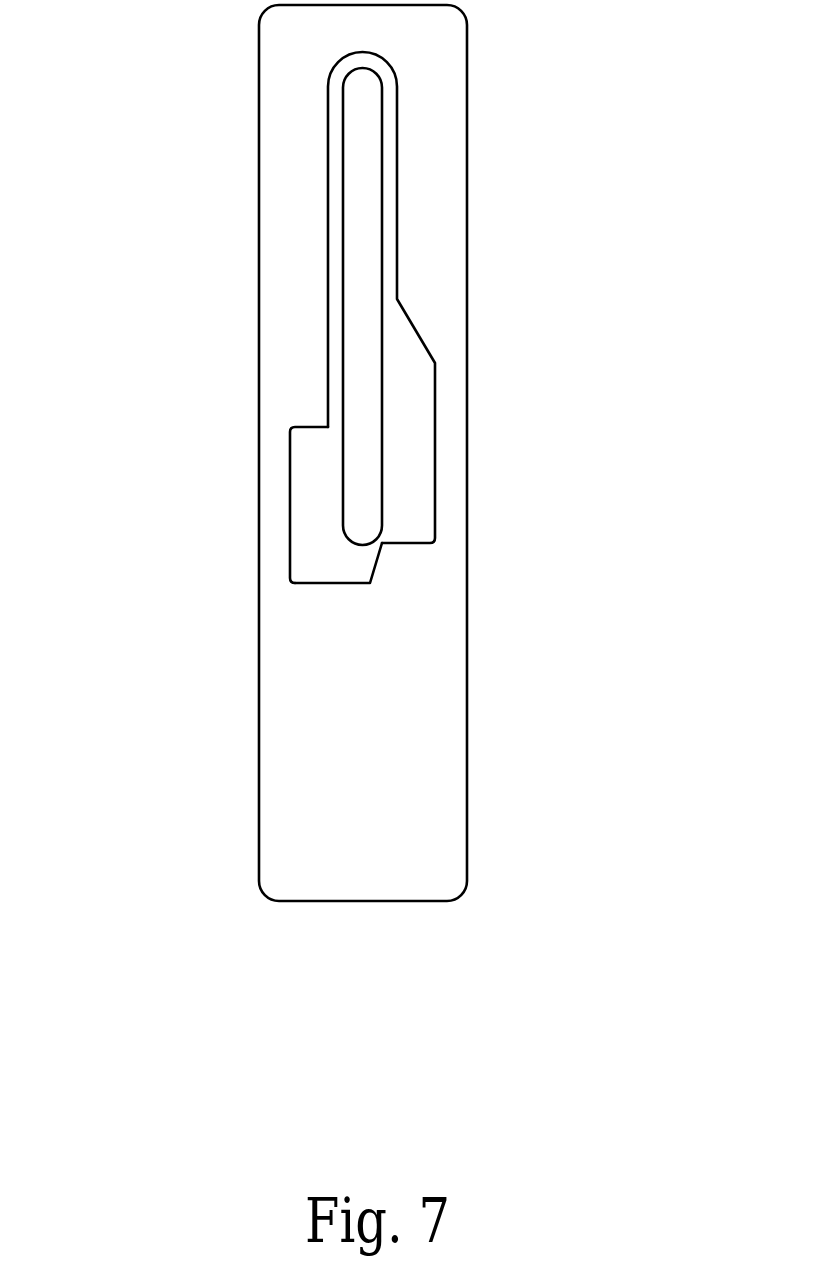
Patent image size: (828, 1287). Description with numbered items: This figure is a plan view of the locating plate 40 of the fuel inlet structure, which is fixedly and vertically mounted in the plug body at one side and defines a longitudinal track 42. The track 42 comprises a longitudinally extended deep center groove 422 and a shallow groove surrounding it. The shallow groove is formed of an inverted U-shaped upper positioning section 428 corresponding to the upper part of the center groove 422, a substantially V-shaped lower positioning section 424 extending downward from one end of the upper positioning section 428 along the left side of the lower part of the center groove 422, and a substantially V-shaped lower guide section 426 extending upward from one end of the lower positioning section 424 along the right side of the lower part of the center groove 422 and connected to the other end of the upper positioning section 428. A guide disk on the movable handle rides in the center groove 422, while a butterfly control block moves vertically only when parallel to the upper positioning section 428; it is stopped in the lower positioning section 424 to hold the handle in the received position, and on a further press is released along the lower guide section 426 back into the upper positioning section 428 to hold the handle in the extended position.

The locating plate 40 is at (322, 680).
The longitudinal track 42 is at (382, 368).
The center groove 422 is at (382, 245).
The lower positioning section 424 is at (327, 420).
The lower guide section 426 is at (382, 545).
The upper positioning section 428 is at (397, 140).